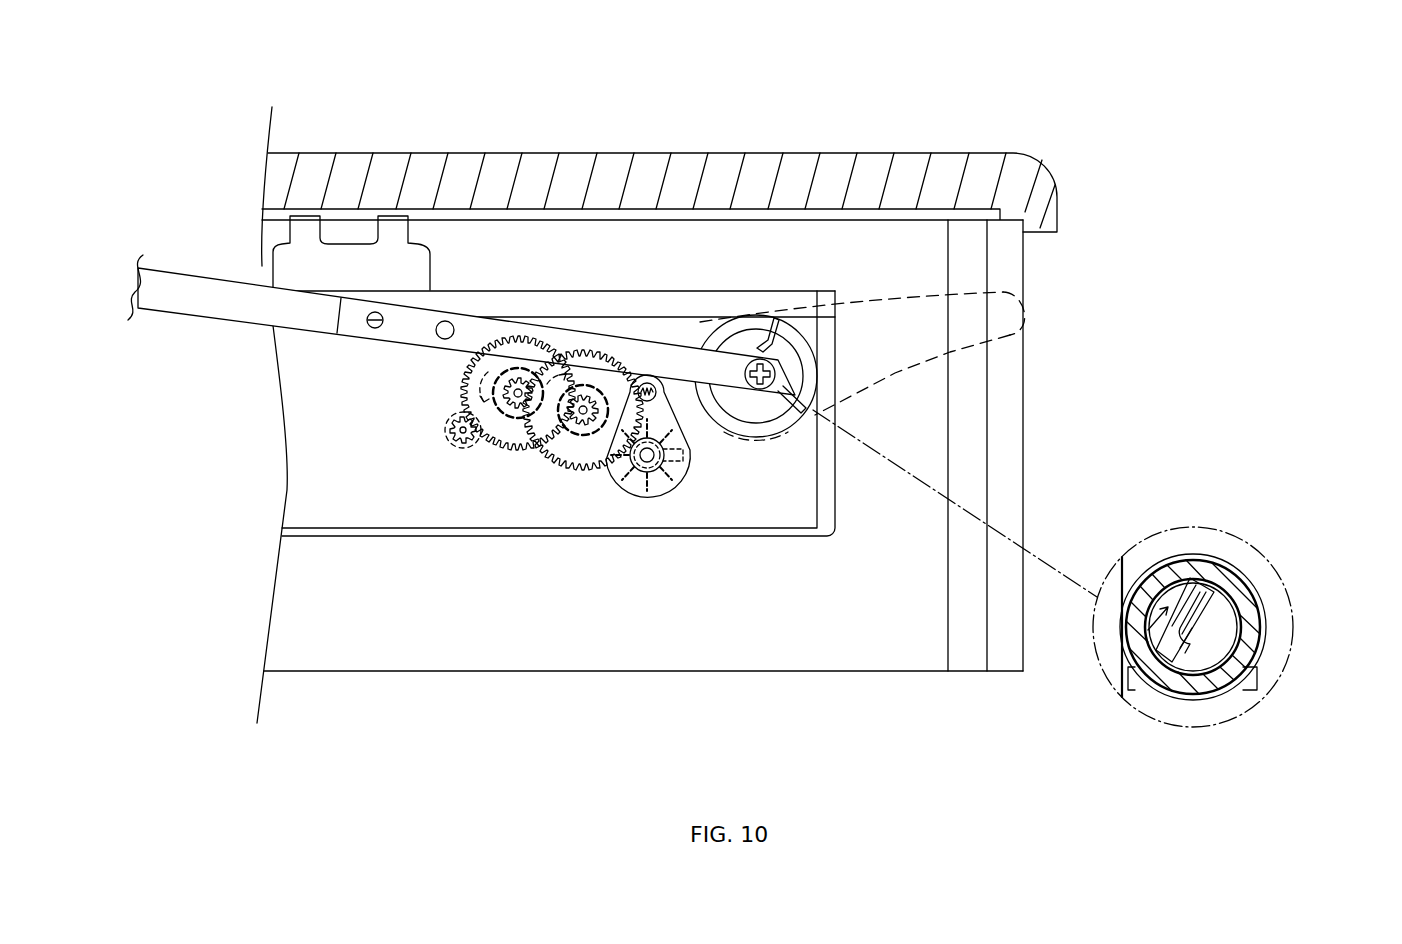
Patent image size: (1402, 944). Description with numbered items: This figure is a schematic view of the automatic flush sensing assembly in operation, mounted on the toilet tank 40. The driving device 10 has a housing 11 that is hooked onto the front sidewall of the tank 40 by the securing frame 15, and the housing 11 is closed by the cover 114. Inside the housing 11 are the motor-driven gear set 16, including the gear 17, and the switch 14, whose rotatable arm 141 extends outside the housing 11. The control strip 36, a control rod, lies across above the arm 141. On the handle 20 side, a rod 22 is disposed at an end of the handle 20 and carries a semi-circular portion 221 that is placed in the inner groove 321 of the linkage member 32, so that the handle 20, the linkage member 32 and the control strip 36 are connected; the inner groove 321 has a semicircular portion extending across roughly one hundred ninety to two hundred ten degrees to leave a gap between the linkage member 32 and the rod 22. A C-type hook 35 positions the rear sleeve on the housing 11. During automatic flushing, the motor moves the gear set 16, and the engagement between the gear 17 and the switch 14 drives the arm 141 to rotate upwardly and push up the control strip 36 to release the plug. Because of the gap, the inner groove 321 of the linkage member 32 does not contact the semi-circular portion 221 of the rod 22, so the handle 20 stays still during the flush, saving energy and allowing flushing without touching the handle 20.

The driving device 10 is at (397, 552).
The housing 11 is at (336, 412).
The cover 114 is at (541, 298).
The securing frame 15 is at (405, 263).
The gear set 16 is at (550, 450).
The gear 17 is at (597, 470).
The switch 14 is at (698, 435).
The arm 141 is at (648, 381).
The control strip 36 is at (230, 297).
The handle 20 is at (1012, 282).
The rod 22 is at (1200, 680).
The semi-circular portion 221 is at (1230, 596).
The linkage member 32 is at (1145, 597).
The inner groove 321 is at (1163, 663).
The C-type hook 35 is at (1257, 663).
The toilet tank 40 is at (827, 672).